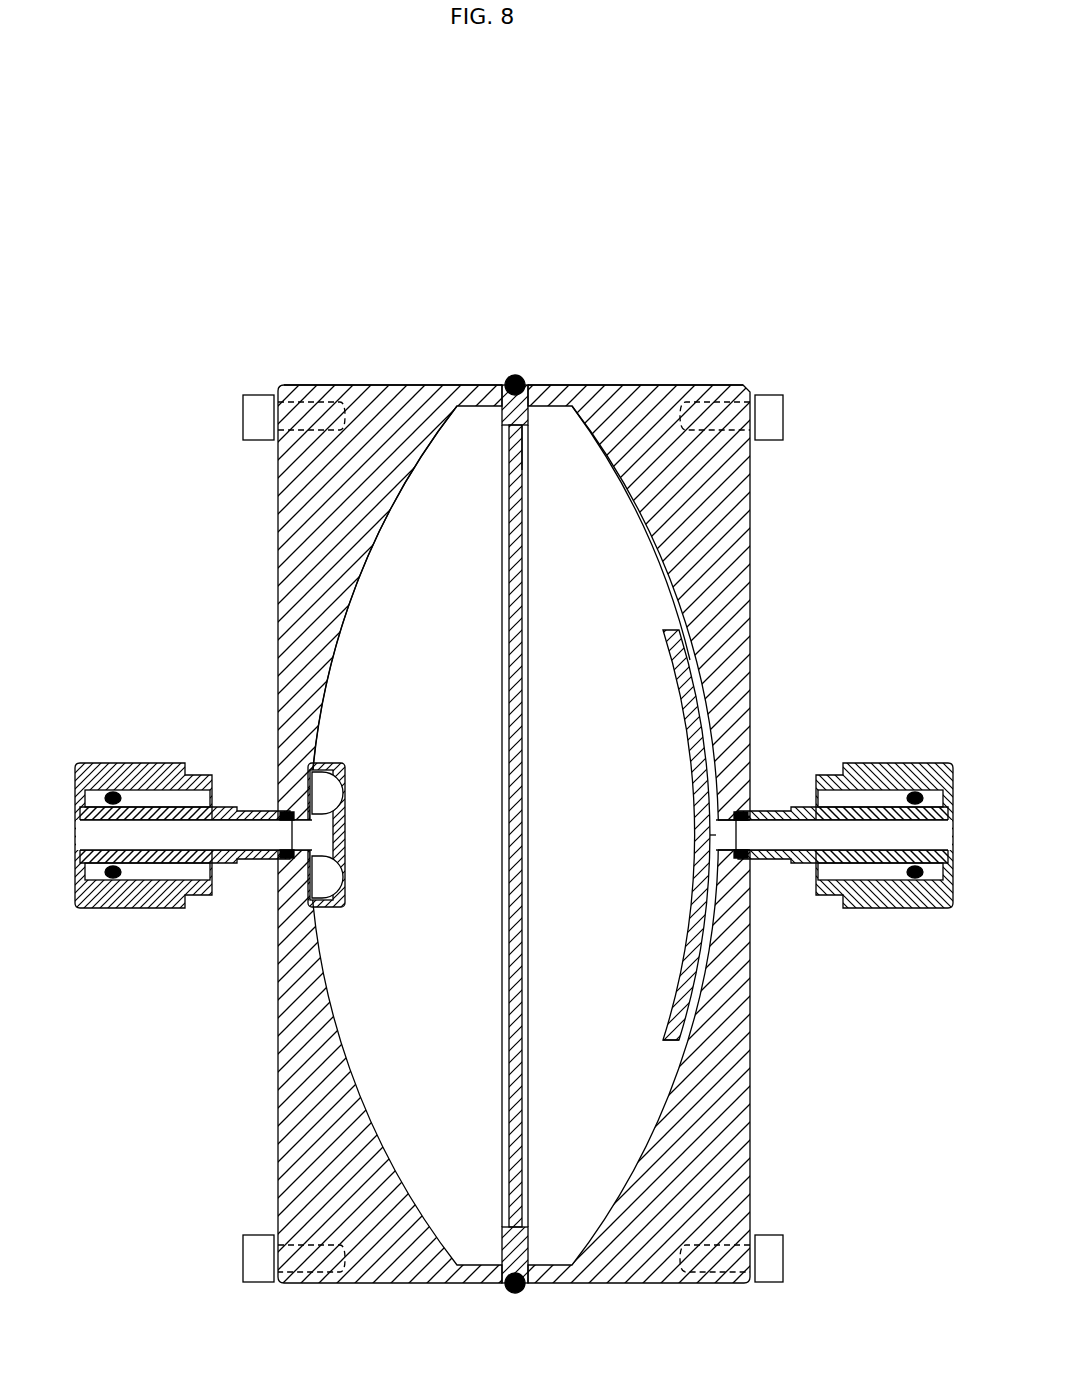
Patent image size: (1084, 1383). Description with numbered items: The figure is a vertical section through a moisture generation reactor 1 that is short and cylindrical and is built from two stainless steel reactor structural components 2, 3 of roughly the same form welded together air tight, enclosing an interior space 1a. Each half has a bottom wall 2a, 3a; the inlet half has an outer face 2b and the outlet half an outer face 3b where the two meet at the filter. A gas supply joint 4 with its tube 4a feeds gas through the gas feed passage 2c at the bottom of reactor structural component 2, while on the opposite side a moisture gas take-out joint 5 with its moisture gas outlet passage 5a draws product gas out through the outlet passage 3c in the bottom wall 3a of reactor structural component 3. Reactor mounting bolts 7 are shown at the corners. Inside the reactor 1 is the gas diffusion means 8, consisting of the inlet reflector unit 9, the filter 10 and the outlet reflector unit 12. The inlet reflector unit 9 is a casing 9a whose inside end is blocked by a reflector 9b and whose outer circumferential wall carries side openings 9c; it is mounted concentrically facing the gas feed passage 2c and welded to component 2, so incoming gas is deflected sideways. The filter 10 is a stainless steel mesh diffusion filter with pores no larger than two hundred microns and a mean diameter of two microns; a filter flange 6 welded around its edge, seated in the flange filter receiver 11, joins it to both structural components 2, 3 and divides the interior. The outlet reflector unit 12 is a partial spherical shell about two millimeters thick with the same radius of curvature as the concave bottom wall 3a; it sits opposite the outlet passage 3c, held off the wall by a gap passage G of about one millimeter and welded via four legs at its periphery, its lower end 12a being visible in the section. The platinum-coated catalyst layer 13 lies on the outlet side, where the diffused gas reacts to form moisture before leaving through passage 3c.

The reactor 1 is at (745, 346).
The interior space of the reactor 1a is at (414, 626).
The reactor structural component 2 is at (296, 546).
The bottom wall of the reactor 2a is at (335, 636).
The top face of first block 2b is at (505, 383).
The gas passage 2c is at (287, 852).
The reactor structural component 3 is at (722, 526).
The bottom wall of the reactor 3a is at (668, 622).
The top face of second block 3b is at (528, 383).
The gas passage 3c is at (745, 832).
The gas supply joint 4 is at (193, 799).
The tube of first connector 4a is at (180, 840).
The moisture gas take-out joint 5 is at (834, 810).
The moisture gas outlet passage 5a is at (843, 835).
The filter flange 6 is at (515, 376).
The reactor mounting bolts 7 is at (243, 429).
The gas diffusion means 8 is at (490, 990).
The reflector unit on the inlet side 9 is at (369, 826).
The casing 9a is at (320, 772).
The reflector 9b is at (346, 815).
The side openings 9c is at (365, 869).
The filter 10 is at (513, 912).
The flange filter receiver 11 is at (524, 430).
The reflector unit on the outlet side 12 is at (690, 920).
The end of diaphragm 12a is at (680, 1038).
The platinum-coated catalyst layer 13 is at (615, 676).
The gap passage G is at (707, 690).